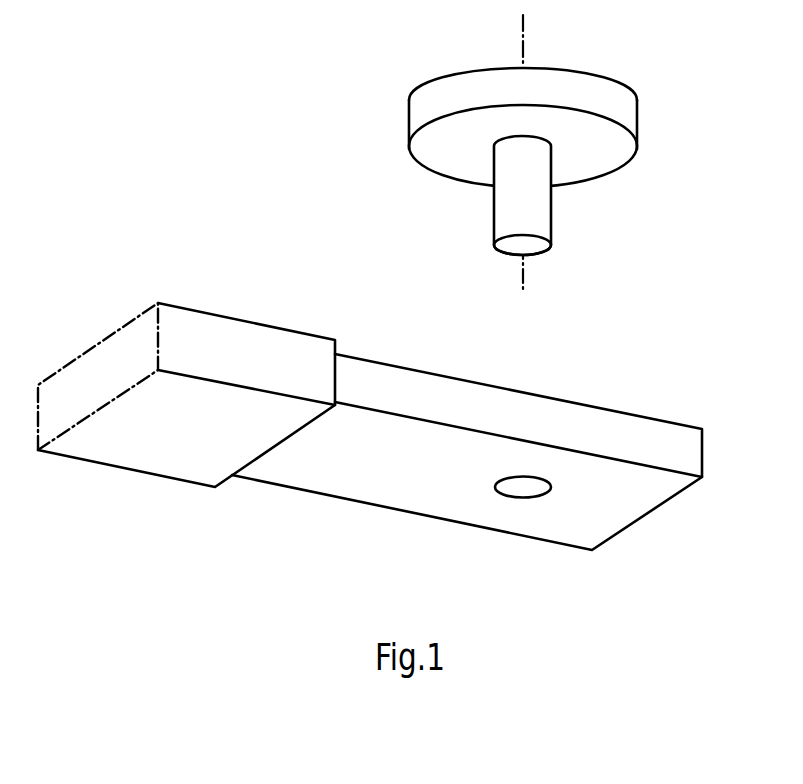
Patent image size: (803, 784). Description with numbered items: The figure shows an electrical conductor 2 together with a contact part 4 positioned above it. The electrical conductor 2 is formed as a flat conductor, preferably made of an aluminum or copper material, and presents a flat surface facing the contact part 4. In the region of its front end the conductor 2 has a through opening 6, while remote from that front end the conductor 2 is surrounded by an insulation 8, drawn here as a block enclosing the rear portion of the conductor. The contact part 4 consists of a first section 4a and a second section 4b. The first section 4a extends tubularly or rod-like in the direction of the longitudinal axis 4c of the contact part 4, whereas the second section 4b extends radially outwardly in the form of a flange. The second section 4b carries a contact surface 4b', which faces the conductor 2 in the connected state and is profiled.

The electrical conductor 2 is at (368, 489).
The contact part 4 is at (671, 80).
The first section 4a is at (538, 208).
The second section 4b is at (491, 152).
The contact surface 4b' is at (519, 170).
The longitudinal axis 4c is at (522, 42).
The through opening 6 is at (523, 486).
The insulation 8 is at (148, 455).